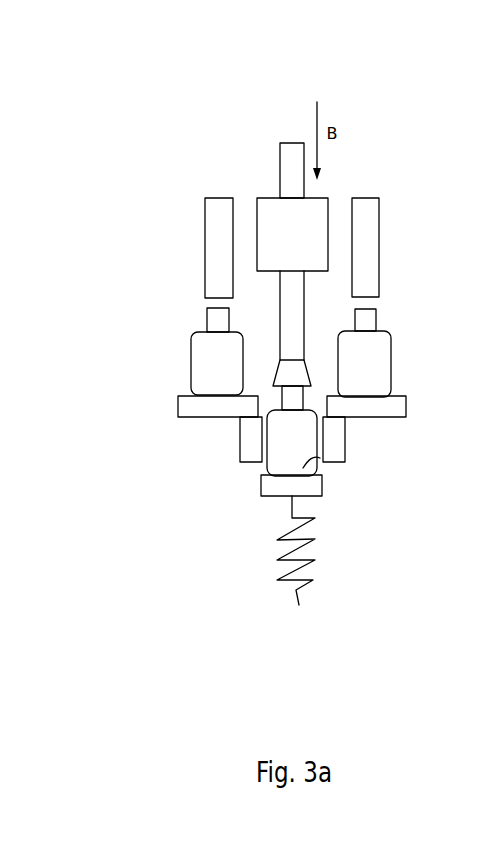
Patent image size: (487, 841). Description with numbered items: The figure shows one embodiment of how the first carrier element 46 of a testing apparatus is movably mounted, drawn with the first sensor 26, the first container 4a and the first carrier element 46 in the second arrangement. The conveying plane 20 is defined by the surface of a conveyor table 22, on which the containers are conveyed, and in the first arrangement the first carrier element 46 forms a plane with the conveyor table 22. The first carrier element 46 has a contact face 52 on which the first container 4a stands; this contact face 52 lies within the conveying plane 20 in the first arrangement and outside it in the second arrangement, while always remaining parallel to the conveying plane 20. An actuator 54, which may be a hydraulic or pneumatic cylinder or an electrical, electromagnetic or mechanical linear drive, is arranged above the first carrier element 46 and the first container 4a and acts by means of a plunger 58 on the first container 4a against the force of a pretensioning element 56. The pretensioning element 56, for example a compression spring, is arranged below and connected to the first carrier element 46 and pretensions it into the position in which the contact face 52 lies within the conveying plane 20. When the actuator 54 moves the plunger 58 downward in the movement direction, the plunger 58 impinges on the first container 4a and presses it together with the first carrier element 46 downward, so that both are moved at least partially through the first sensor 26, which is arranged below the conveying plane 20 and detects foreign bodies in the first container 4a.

The actuator 54 is at (272, 215).
The plunger 58 is at (290, 373).
The conveying plane 20 is at (367, 395).
The conveyor table 22 is at (390, 408).
The first container 4a is at (287, 450).
The first sensor 26 is at (248, 432).
The contact face 52 is at (303, 468).
The first carrier element 46 is at (303, 487).
The pretensioning element 56 is at (295, 598).